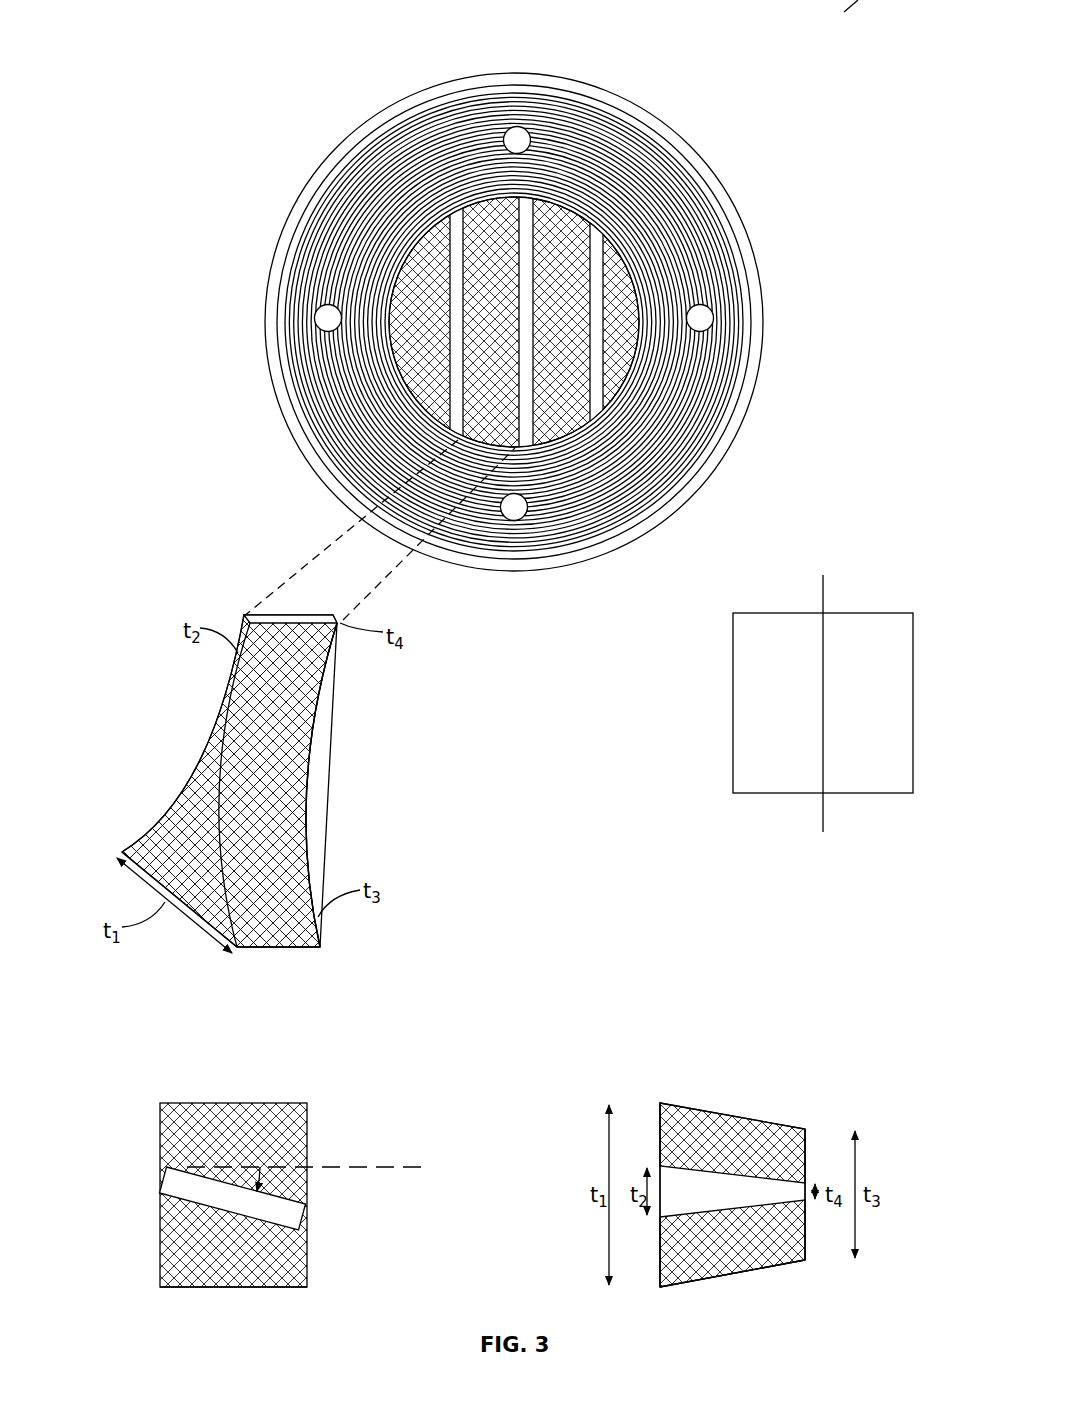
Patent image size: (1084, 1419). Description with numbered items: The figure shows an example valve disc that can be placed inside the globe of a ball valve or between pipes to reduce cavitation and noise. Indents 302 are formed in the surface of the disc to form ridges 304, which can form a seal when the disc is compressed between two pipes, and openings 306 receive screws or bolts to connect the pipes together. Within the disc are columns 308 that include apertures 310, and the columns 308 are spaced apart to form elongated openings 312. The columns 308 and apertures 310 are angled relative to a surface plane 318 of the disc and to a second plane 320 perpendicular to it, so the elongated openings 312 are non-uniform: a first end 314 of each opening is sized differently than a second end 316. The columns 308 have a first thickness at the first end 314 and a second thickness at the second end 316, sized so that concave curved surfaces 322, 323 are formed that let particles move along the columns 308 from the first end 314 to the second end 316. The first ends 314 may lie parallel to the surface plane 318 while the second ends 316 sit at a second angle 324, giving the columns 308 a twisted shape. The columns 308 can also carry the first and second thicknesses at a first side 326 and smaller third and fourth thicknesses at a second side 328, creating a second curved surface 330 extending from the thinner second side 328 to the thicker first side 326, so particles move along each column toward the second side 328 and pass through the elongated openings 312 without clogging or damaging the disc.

The indents 302 is at (718, 233).
The ridges 304 is at (617, 143).
The openings 306 is at (705, 316).
The columns 308 is at (337, 680).
The apertures 310 is at (273, 785).
The elongated openings 312 is at (460, 212).
The first end 314 is at (457, 437).
The second end 316 is at (455, 235).
The surface plane 318 is at (746, 777).
The second plane 320 is at (823, 590).
The curved surface 322 is at (308, 835).
The curved surface 323 is at (162, 825).
The second angle 324 is at (293, 1180).
The first side 326 is at (238, 950).
The second side 328 is at (320, 947).
The second curved surface 330 is at (760, 1268).